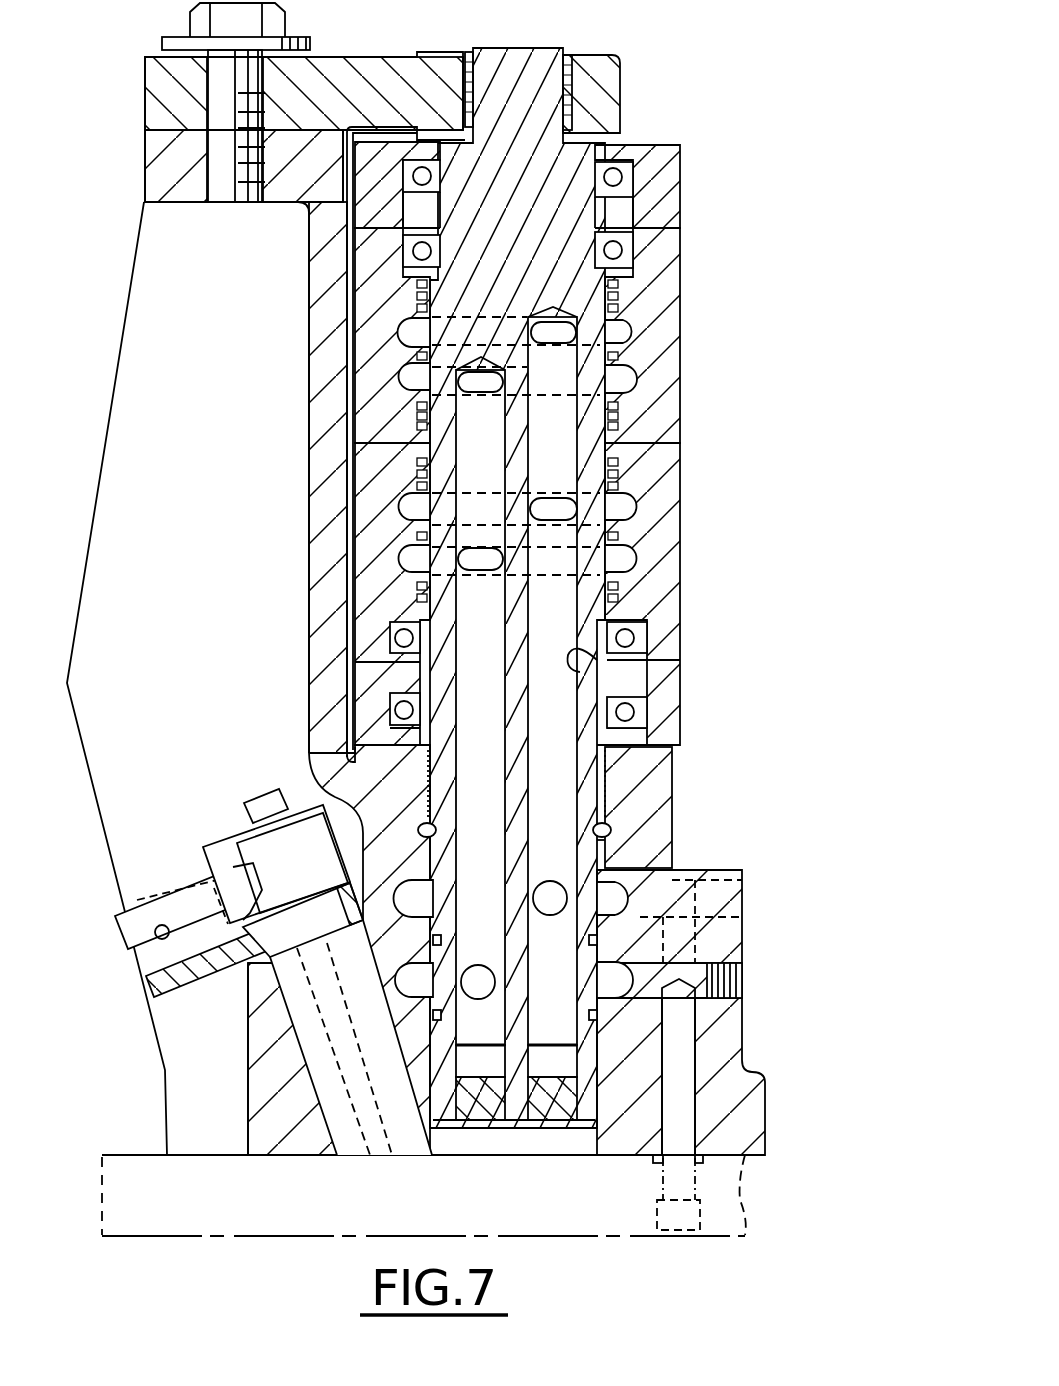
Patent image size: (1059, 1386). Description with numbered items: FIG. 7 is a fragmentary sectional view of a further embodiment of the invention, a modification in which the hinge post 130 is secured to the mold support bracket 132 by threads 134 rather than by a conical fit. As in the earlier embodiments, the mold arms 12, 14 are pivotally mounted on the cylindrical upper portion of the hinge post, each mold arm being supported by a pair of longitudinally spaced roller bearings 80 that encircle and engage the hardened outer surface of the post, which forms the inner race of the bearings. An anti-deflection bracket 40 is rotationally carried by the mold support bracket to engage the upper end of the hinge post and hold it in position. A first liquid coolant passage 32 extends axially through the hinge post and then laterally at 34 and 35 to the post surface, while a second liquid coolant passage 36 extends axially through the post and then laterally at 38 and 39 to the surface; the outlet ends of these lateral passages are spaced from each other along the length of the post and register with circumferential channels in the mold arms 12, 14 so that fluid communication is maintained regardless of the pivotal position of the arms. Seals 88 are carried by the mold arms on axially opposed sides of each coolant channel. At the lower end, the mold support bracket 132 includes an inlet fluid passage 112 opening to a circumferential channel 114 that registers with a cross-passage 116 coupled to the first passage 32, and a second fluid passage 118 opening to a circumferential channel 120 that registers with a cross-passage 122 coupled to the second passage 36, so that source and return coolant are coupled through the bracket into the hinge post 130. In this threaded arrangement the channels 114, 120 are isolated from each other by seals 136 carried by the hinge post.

The mold arm 12 is at (690, 370).
The mold arm 14 is at (690, 573).
The first liquid coolant passage 32 is at (448, 624).
The lateral coolant passage 34 is at (412, 382).
The lateral coolant passage 35 is at (412, 553).
The second liquid coolant passage 36 is at (640, 668).
The lateral coolant passage 38 is at (640, 512).
The lateral coolant passage 39 is at (625, 341).
The anti-deflection bracket 40 is at (603, 62).
The roller bearings 80 is at (640, 250).
The seals 88 is at (628, 293).
The inlet fluid passage 112 is at (698, 1066).
The circumferential channel 114 is at (432, 995).
The cross-passage 116 is at (478, 1000).
The second fluid passage 118 is at (746, 951).
The circumferential channel 120 is at (674, 839).
The cross-passage 122 is at (550, 916).
The hinge post 130 is at (612, 136).
The mold support bracket 132 is at (738, 866).
The threads 134 is at (674, 775).
The seals 136 is at (625, 885).